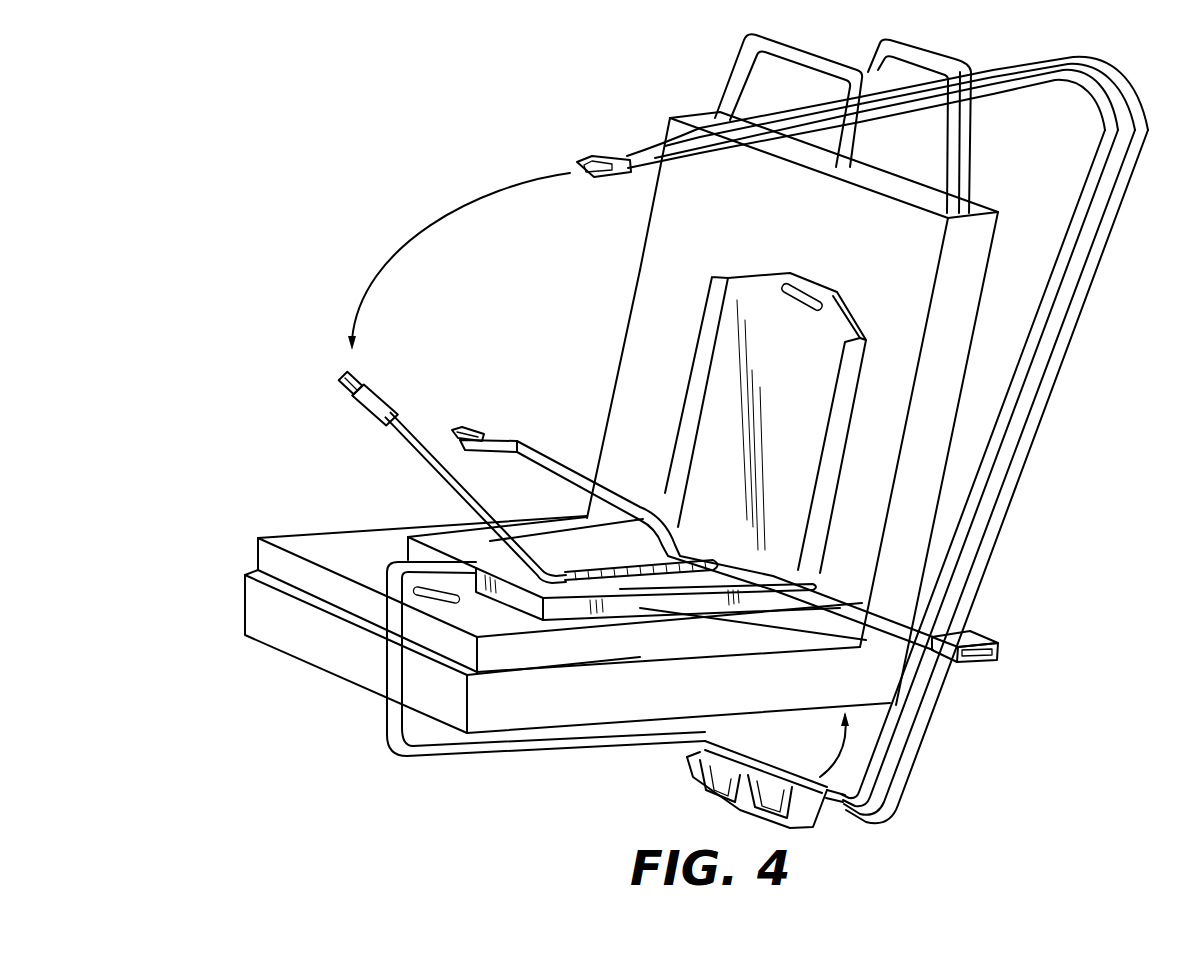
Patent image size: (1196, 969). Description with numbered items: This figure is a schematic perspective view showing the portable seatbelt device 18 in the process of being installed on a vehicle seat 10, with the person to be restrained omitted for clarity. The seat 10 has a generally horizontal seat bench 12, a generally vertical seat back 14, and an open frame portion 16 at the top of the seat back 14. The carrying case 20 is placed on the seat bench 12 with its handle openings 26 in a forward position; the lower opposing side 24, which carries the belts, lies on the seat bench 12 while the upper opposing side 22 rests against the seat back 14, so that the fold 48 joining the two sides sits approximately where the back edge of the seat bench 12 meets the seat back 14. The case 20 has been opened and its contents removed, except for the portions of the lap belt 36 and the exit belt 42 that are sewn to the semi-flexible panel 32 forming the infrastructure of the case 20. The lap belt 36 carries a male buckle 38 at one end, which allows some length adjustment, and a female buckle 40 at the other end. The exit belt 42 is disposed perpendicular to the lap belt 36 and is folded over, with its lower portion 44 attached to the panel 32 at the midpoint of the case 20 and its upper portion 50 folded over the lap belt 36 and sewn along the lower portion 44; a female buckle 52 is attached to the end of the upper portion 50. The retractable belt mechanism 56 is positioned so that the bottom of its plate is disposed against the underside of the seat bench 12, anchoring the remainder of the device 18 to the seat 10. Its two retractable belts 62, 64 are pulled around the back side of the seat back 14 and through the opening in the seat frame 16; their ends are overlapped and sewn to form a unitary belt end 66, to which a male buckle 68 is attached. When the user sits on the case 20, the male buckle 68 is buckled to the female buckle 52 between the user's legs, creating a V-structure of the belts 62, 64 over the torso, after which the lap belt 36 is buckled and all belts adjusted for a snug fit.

The seat 10 is at (1005, 300).
The seat bench 12 is at (272, 536).
The seat back 14 is at (640, 270).
The open frame portion 16 is at (732, 78).
The portable seatbelt device 18 is at (675, 395).
The carrying case 20 is at (755, 278).
The upper opposing side 22 is at (698, 337).
The lower opposing side 24 is at (437, 534).
The handle opening 26 is at (803, 288).
The semi-flexible panel 32 is at (604, 555).
The lap belt 36 is at (535, 448).
The male buckle 38 is at (484, 430).
The female buckle 40 is at (996, 640).
The exit belt 42 is at (575, 566).
The lower portion 44 is at (396, 745).
The fold 48 is at (814, 590).
The upper portion 50 is at (404, 420).
The female buckle 52 is at (346, 379).
The retractable belt mechanism 56 is at (692, 790).
The retractable belt 62 is at (1081, 189).
The retractable belt 64 is at (1047, 418).
The unitary belt end 66 is at (640, 153).
The male buckle 68 is at (588, 160).